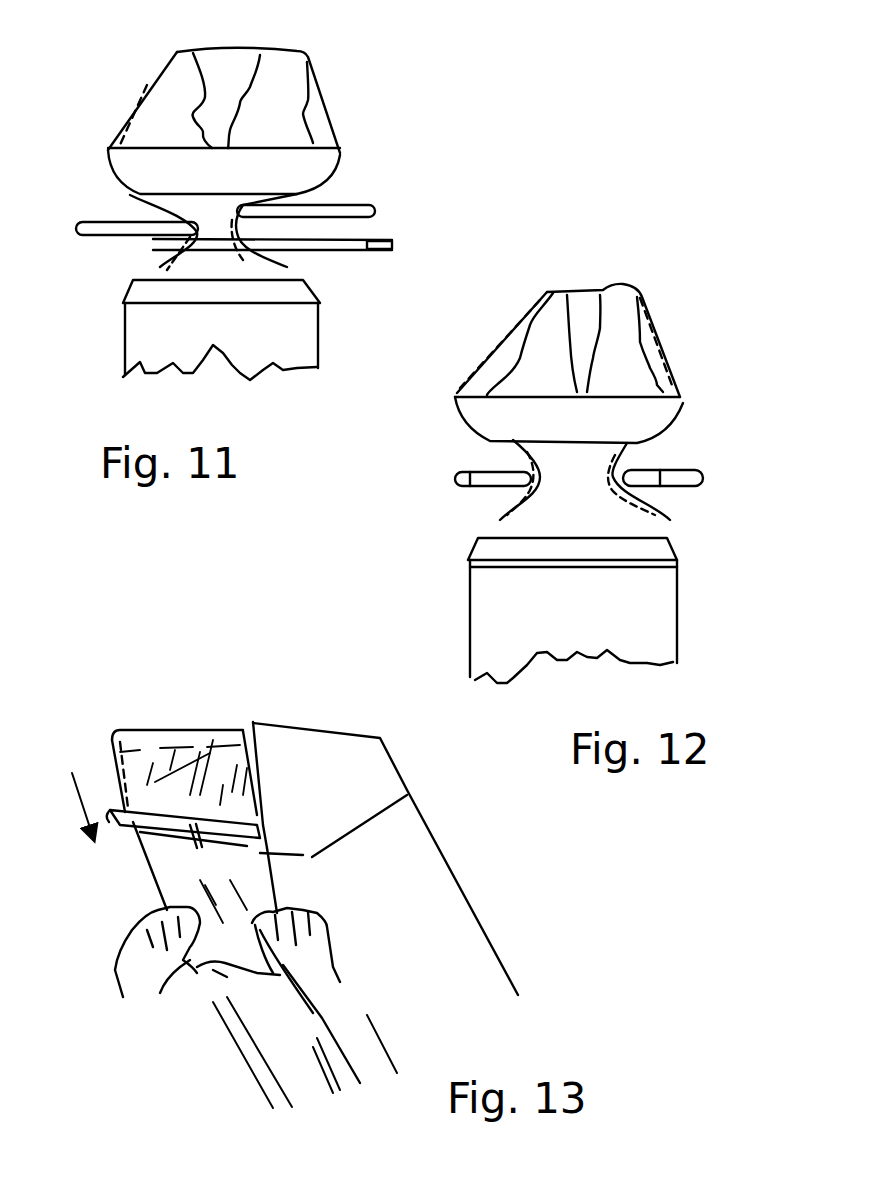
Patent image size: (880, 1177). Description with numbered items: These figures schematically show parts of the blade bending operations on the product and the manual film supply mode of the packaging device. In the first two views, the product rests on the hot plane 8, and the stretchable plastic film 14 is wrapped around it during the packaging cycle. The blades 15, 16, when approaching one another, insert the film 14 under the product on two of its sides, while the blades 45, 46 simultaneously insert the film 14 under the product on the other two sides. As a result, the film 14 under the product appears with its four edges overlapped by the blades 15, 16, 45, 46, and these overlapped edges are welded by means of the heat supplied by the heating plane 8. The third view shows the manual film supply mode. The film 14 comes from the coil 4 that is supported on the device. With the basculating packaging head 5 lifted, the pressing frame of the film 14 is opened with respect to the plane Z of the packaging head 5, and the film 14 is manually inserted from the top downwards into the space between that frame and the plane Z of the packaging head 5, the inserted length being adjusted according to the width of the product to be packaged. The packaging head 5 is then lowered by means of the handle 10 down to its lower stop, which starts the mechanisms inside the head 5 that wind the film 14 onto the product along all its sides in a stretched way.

In FIG. 11, the stretchable plastic film 14 is at (133, 112).
In FIG. 12, the stretchable plastic film 14 is at (507, 332).
In FIG. 11, the blade 15 is at (327, 212).
In FIG. 11, the blade 16 is at (110, 226).
In FIG. 11, the blade 45 is at (377, 243).
In FIG. 12, the blade 45 is at (457, 483).
In FIG. 12, the blade 46 is at (670, 487).
In FIG. 11, the hot plane 8 is at (152, 347).
In FIG. 12, the hot plane 8 is at (495, 602).
In FIG. 13, the handle 10 is at (162, 742).
In FIG. 13, the coil 4 is at (183, 788).
In FIG. 13, the packaging head 5 is at (423, 963).
In FIG. 13, the plane Z is at (283, 892).